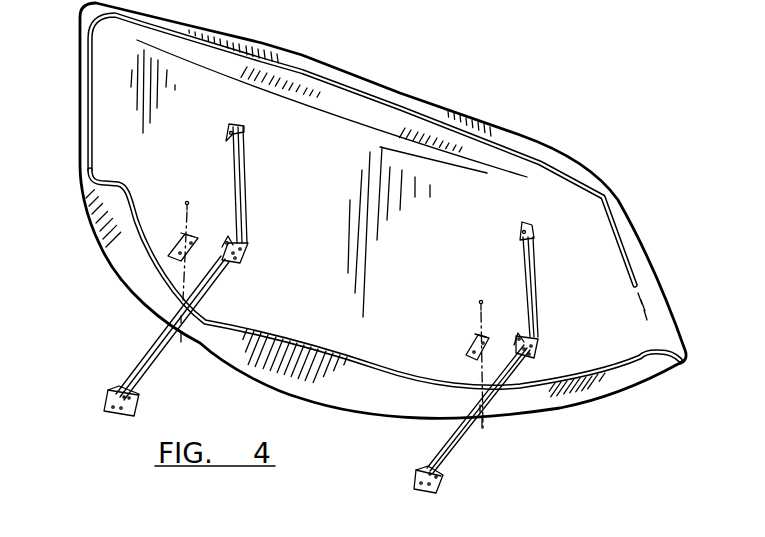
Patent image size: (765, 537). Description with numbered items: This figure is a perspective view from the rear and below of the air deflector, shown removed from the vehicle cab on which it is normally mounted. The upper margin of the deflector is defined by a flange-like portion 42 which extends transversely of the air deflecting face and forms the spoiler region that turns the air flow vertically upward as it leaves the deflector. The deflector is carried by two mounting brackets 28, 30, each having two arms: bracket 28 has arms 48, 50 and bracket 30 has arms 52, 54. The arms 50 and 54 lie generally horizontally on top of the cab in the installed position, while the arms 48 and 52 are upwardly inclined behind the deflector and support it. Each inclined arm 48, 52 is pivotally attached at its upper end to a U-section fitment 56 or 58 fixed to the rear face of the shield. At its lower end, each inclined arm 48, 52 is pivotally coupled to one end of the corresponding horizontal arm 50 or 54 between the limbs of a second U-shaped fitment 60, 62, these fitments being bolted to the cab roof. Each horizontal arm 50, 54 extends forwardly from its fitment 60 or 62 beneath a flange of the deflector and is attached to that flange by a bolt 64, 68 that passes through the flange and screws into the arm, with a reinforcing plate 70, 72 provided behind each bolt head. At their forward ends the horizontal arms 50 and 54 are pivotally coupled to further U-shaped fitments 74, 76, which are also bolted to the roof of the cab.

The flange-like portion 42 is at (378, 91).
The mounting bracket 30 is at (251, 219).
The mounting bracket 28 is at (521, 277).
The upwardly inclined arm 52 is at (247, 177).
The upwardly inclined arm 48 is at (536, 271).
The horizontal arm 54 is at (152, 362).
The horizontal arm 50 is at (462, 440).
The U-section fitment 58 is at (229, 130).
The U-section fitment 56 is at (528, 222).
The second U-shaped fitment 62 is at (245, 255).
The second U-shaped fitment 60 is at (538, 349).
The U-shaped fitment 76 is at (104, 395).
The U-shaped fitment 74 is at (414, 477).
The bolt 68 is at (187, 202).
The bolt 64 is at (479, 302).
The reinforcing plate 72 is at (178, 240).
The reinforcing plate 70 is at (465, 344).